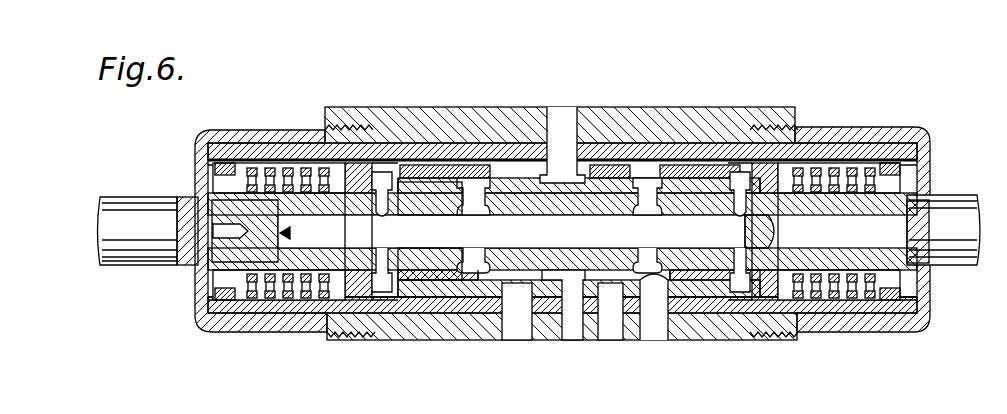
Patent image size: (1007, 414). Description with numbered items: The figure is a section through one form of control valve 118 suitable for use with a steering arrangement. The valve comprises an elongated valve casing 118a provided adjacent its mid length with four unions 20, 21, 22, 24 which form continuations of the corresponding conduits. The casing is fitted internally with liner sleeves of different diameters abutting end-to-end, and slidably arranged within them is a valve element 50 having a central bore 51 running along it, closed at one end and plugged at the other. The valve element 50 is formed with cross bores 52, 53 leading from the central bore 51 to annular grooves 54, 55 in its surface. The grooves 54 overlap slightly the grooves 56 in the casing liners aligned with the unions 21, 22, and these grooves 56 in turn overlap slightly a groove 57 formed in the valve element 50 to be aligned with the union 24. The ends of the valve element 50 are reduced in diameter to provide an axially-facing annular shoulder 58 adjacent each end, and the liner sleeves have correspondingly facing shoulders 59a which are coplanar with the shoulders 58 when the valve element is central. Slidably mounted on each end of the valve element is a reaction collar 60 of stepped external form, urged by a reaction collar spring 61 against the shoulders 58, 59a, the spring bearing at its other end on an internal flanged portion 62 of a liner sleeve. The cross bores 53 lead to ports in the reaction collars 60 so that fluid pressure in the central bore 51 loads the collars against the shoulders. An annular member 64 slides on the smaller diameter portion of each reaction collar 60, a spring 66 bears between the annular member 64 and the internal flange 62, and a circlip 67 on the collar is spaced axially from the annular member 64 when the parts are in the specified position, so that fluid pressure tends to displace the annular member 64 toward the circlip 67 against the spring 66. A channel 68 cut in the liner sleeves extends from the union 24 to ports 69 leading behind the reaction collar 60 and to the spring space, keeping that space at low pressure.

The control valve 118 is at (481, 104).
The valve casing 118a is at (378, 125).
The ports 69 is at (330, 150).
The channel 68 is at (407, 160).
The annular shoulder 58 is at (447, 165).
The annular grooves 54 is at (480, 172).
The grooves 56 is at (520, 165).
The union 24 is at (562, 128).
The internal flanged portion 62 is at (228, 188).
The annular grooves 55 is at (380, 263).
The cross bores 53 is at (390, 272).
The cross bores 52 is at (470, 203).
The central bore 51 is at (258, 273).
The spring 66 is at (258, 290).
The reaction collar springs 61 is at (252, 305).
The circlip 67 is at (305, 292).
The annular member 64 is at (353, 287).
The reaction collar 60 is at (386, 285).
The shoulders 59a is at (432, 305).
The valve element 50 is at (468, 330).
The union 22 is at (517, 310).
The groove 57 is at (567, 330).
The union 21 is at (613, 330).
The union 20 is at (653, 330).